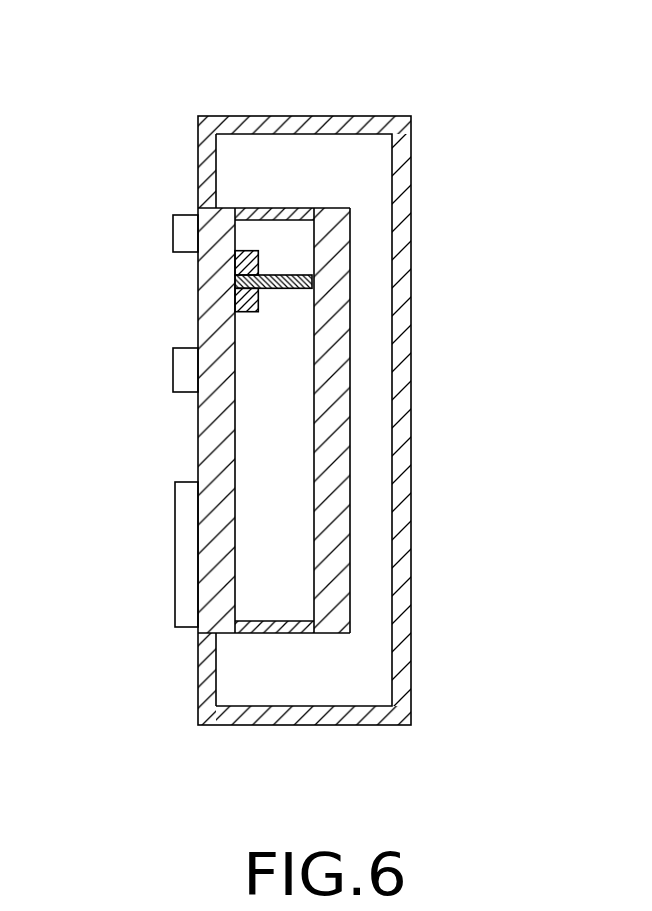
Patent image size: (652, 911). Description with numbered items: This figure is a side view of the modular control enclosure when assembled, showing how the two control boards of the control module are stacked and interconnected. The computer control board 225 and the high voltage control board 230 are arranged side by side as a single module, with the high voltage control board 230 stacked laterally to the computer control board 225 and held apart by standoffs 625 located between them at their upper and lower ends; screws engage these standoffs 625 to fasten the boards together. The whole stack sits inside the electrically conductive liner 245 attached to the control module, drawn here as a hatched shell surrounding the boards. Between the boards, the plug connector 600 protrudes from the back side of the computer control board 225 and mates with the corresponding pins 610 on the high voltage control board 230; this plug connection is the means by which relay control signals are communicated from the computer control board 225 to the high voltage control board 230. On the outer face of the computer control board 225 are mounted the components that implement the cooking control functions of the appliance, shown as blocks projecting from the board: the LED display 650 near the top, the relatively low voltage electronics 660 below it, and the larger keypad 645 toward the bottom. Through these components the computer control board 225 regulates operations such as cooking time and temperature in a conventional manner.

The computer control board 225 is at (198, 437).
The high voltage control board 230 is at (350, 367).
The electrically conductive liner 245 is at (358, 116).
The plug connector 600 is at (266, 328).
The pins 610 is at (290, 305).
The standoffs 625 is at (257, 207).
The keypad 645 is at (175, 543).
The LED display 650 is at (172, 233).
The low voltage electronics 660 is at (172, 372).